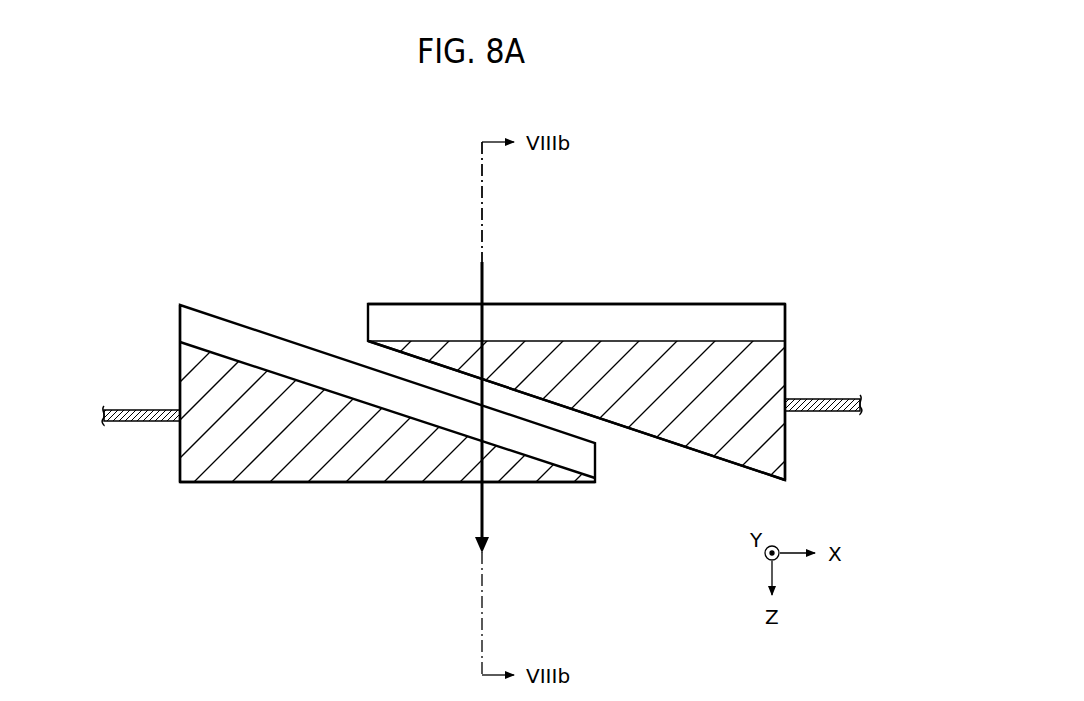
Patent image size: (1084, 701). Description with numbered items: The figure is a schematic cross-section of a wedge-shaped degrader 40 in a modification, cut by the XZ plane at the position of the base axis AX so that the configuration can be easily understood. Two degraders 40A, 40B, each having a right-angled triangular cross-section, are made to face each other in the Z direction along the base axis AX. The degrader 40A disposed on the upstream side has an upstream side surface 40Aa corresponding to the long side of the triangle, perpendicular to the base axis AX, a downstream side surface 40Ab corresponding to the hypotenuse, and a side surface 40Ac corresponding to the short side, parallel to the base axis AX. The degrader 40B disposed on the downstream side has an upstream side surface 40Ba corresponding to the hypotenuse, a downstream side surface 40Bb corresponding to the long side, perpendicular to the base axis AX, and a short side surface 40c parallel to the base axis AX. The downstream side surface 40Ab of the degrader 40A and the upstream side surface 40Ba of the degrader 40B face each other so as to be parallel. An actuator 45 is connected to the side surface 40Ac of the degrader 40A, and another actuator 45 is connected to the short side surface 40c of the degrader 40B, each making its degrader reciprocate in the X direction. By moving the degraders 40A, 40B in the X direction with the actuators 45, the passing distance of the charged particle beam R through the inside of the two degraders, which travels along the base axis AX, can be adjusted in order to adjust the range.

The wedge-shaped degrader 40 is at (625, 150).
The degrader 40A is at (697, 348).
The upstream side surface 40Aa is at (585, 340).
The downstream side surface 40Ab is at (661, 441).
The side surface 40Ac is at (786, 356).
The degrader 40B is at (261, 464).
The upstream side surface 40Ba is at (285, 368).
The downstream side surface 40Bb is at (358, 484).
The side surface of second prism 40c is at (179, 368).
The actuator 45 is at (124, 408).
The base axis AX is at (483, 229).
The charged particle beam R is at (484, 284).